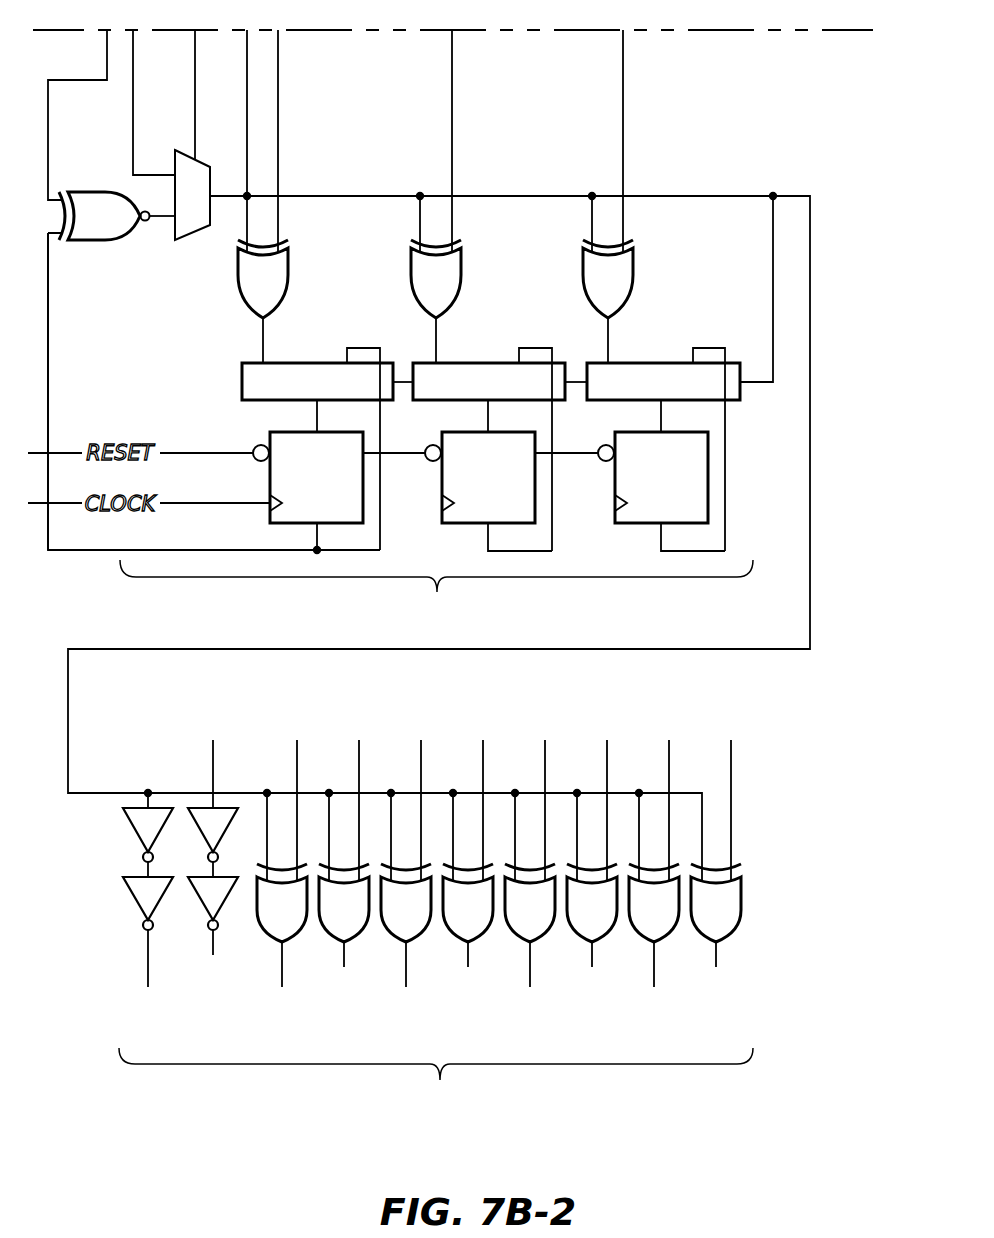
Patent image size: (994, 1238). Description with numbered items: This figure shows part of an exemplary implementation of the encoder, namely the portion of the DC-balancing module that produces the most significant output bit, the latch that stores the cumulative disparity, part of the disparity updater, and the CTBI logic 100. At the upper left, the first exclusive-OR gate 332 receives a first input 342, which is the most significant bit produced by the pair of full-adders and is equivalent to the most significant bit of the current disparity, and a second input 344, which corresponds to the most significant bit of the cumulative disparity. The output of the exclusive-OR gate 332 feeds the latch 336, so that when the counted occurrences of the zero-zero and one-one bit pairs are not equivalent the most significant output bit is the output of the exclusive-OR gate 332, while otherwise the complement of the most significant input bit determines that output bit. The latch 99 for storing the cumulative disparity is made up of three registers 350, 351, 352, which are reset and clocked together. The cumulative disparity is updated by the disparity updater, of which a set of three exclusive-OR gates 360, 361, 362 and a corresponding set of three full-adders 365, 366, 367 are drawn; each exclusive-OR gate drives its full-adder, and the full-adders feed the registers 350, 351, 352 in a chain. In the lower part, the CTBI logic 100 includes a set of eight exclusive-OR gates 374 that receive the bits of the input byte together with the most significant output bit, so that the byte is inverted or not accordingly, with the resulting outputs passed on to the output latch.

The first input 342 is at (48, 152).
The first exclusive-OR gate 332 is at (97, 242).
The latch 336 is at (190, 237).
The exclusive-OR gate 360 is at (289, 282).
The exclusive-OR gate 361 is at (462, 282).
The exclusive-OR gate 362 is at (634, 282).
The full-adder 365 is at (290, 362).
The full-adder 366 is at (462, 362).
The full-adder 367 is at (636, 362).
The second input 344 is at (48, 425).
The register 350 is at (339, 475).
The register 351 is at (511, 475).
The register 352 is at (661, 475).
The latch 99 is at (436, 591).
The CTBI logic 100 is at (777, 778).
The exclusive-OR gates 374 is at (290, 918).